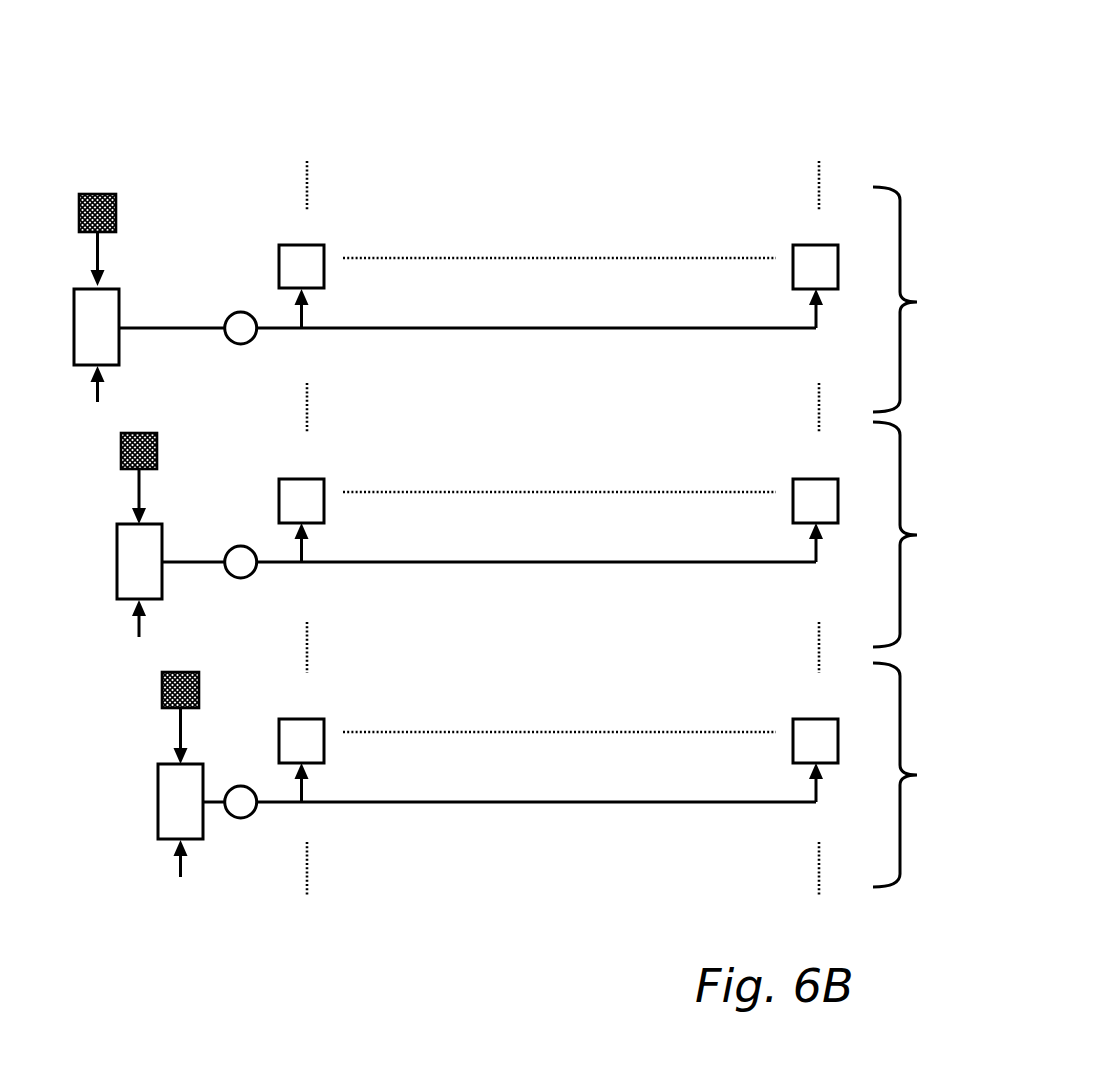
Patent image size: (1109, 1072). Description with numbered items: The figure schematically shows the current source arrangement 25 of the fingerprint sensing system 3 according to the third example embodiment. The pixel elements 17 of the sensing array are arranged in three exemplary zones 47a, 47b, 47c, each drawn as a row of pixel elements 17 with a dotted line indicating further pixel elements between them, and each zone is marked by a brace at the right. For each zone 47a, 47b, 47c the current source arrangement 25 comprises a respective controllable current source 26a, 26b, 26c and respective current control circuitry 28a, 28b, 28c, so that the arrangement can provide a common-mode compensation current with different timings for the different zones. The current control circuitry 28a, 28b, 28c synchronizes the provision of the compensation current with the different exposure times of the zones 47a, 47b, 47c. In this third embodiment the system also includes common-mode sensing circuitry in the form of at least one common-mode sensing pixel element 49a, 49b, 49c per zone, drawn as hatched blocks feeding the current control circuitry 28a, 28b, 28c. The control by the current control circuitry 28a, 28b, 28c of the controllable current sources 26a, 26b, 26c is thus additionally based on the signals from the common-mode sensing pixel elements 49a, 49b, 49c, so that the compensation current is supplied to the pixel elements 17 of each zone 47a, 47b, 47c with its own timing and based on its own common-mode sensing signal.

The fingerprint sensing system 3 is at (635, 58).
The current source arrangement 25 is at (579, 201).
The pixel element 17 is at (302, 243).
The controllable current source 26a is at (240, 344).
The controllable current source 26b is at (241, 578).
The controllable current source 26c is at (241, 818).
The current control circuitry 28a is at (113, 288).
The current control circuitry 28b is at (150, 523).
The current control circuitry 28c is at (200, 763).
The zone 47a is at (925, 299).
The zone 47b is at (925, 534).
The zone 47c is at (924, 775).
The common-mode sensing pixel element 49a is at (96, 193).
The common-mode sensing pixel element 49b is at (140, 432).
The common-mode sensing pixel element 49c is at (181, 670).